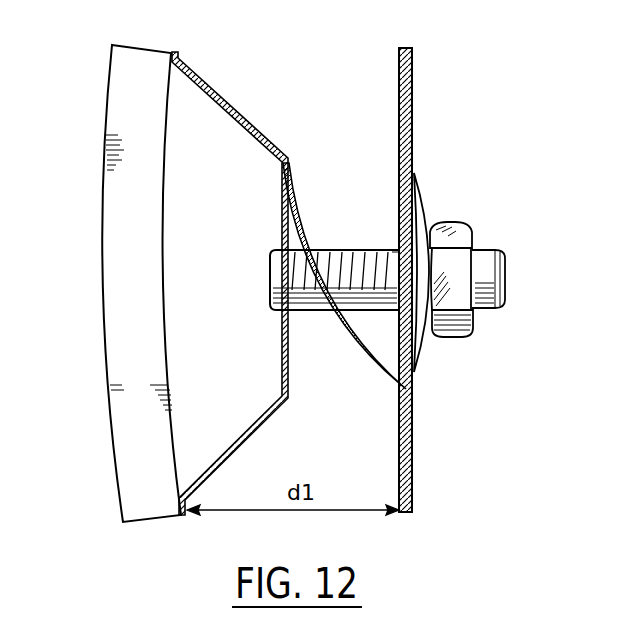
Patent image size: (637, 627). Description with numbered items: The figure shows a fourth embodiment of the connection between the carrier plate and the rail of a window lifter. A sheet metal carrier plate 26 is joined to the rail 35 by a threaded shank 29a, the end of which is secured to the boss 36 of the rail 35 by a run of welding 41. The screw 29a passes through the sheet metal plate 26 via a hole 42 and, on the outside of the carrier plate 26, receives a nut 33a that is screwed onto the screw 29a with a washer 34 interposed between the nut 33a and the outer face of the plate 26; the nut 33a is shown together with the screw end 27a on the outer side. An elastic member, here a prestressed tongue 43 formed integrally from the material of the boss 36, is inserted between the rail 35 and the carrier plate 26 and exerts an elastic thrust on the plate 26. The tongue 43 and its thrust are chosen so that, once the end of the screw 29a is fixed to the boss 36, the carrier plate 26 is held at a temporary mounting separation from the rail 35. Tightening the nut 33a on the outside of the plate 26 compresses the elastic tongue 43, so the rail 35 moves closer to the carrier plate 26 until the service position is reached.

The carrier plate 26 is at (413, 110).
The nut 27a is at (434, 214).
The threaded shank 29a is at (328, 250).
The nut 33a is at (448, 338).
The washer 34 is at (427, 187).
The rail 35 is at (121, 312).
The boss 36 is at (243, 126).
The run of welding 41 is at (278, 248).
The hole 42 is at (394, 253).
The prestressed tongue 43 is at (370, 357).